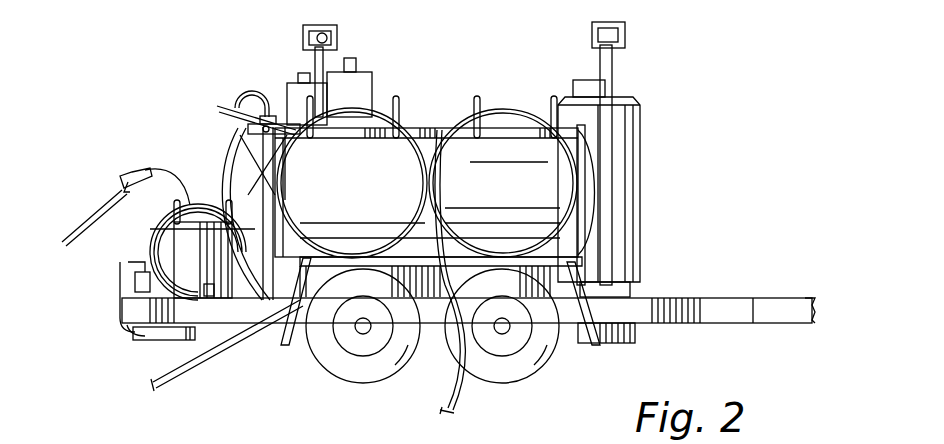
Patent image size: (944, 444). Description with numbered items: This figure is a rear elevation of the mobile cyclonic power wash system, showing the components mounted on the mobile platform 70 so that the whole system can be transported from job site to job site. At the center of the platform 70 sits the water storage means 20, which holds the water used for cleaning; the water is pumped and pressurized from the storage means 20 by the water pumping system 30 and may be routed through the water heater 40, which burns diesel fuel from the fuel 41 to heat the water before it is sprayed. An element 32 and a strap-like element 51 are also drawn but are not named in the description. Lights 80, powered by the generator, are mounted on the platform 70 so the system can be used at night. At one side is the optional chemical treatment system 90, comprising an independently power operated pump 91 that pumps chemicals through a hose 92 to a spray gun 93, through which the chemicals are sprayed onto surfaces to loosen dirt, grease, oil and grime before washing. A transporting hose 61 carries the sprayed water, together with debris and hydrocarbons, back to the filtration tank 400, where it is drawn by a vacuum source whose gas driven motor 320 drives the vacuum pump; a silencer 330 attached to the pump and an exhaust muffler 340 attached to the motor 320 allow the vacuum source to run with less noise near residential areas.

The water storage means 20 is at (487, 155).
The water pumping system 30 is at (640, 343).
The control box 32 is at (290, 90).
The water heater 40 is at (632, 140).
The fuel 41 is at (362, 77).
The tank strap 51 is at (482, 117).
The transporting hose 61 is at (243, 97).
The mobile platform 70 is at (270, 318).
The lights 80 is at (337, 35).
The chemical treatment system 90 is at (190, 240).
The pump 91 is at (207, 296).
The hose 92 is at (195, 202).
The spray gun 93 is at (112, 180).
The gas driven motor 320 is at (140, 280).
The silencer 330 is at (160, 345).
The exhaust muffler 340 is at (130, 340).
The filtration tank 400 is at (240, 97).